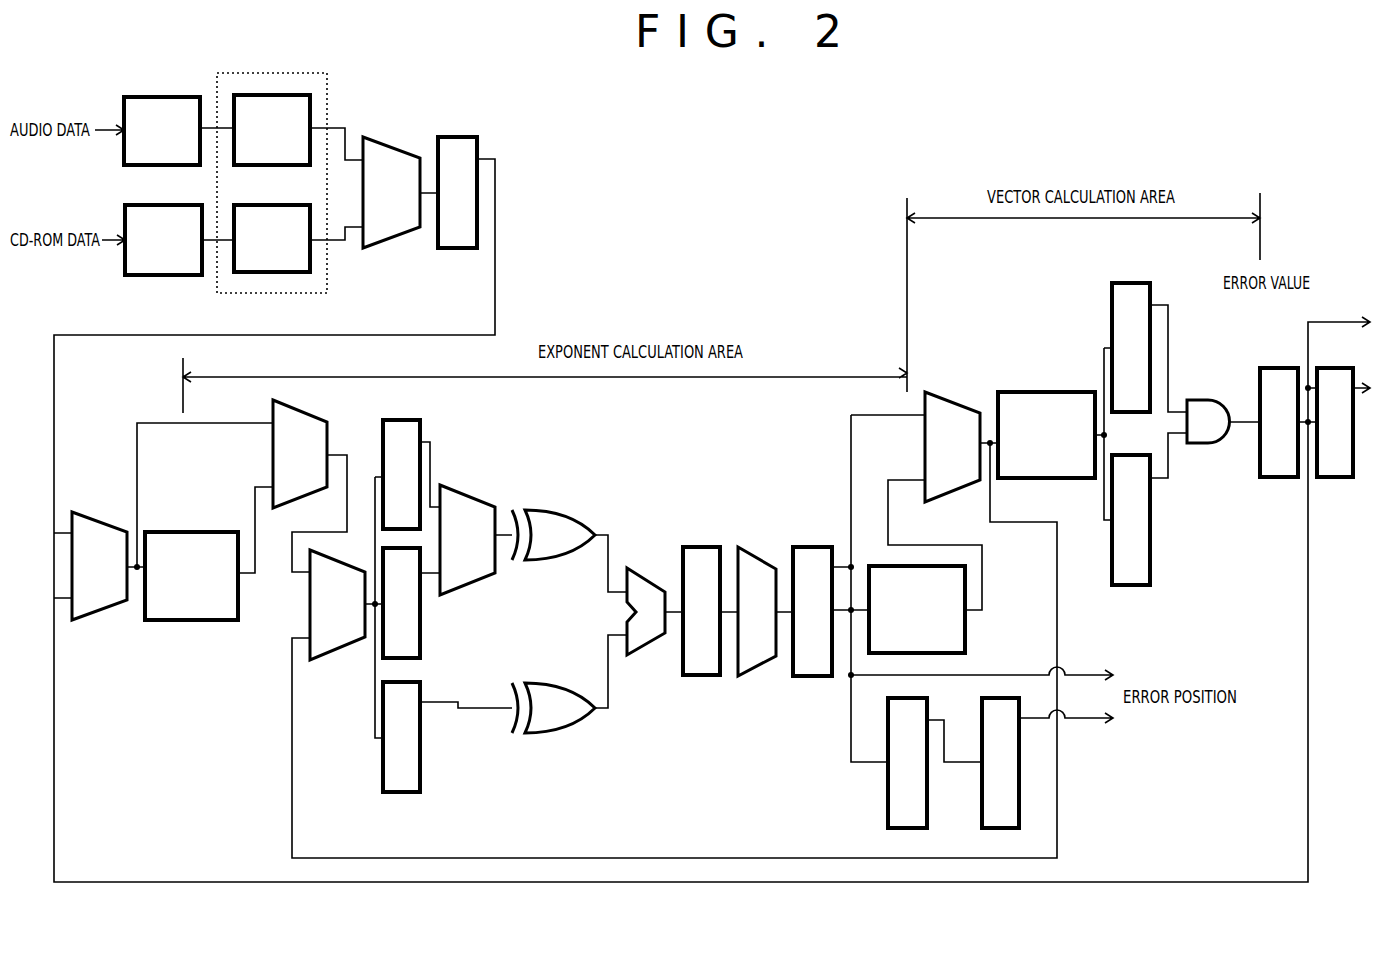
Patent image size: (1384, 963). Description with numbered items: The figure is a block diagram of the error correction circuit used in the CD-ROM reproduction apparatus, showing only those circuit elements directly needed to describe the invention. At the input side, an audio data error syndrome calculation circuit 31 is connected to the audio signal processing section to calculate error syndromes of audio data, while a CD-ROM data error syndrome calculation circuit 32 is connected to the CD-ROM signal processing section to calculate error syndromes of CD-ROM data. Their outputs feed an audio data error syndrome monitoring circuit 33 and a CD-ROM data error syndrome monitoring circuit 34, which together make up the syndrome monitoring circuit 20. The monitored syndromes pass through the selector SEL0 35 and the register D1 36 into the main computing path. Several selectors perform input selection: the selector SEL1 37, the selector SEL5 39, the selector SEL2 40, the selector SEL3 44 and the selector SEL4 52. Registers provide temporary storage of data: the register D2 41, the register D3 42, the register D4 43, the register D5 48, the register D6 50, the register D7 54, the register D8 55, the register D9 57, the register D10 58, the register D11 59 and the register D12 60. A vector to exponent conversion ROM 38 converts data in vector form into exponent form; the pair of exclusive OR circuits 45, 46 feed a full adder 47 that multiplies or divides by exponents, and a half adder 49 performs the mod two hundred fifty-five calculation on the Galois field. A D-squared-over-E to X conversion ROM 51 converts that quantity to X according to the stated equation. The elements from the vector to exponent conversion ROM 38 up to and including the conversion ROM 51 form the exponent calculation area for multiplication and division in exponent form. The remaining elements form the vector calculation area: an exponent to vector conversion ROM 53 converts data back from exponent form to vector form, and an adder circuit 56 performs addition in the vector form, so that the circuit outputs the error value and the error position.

The syndrome monitoring circuit 20 is at (263, 68).
The audio data error syndrome calculation circuit 31 is at (150, 96).
The CD-ROM data error syndrome calculation circuit 32 is at (155, 276).
The audio data error syndrome monitoring circuit 33 is at (300, 95).
The CD-ROM data error syndrome monitoring circuit 34 is at (265, 273).
The selector SEL0 35 is at (393, 148).
The register D1 36 is at (450, 134).
The selector SEL1 37 is at (96, 514).
The vector to exponent conversion ROM 38 is at (174, 531).
The selector SEL5 39 is at (331, 433).
The selector SEL2 40 is at (307, 601).
The register D2 41 is at (408, 422).
The register D3 42 is at (422, 618).
The register D4 43 is at (422, 736).
The selector SEL3 44 is at (470, 499).
The exclusive OR circuit EXOR1 45 is at (566, 511).
The exclusive OR circuit EXOR2 46 is at (563, 684).
The full adder 47 is at (637, 572).
The register D5 48 is at (700, 546).
The half adder 49 is at (746, 677).
The register D6 50 is at (817, 542).
The D^2/E to X conversion ROM 51 is at (967, 643).
The selector SEL4 52 is at (968, 405).
The exponent to vector conversion ROM 53 is at (1053, 392).
The register D7 54 is at (1127, 281).
The register D8 55 is at (1151, 553).
The adder circuit 56 is at (1200, 447).
The register D9 57 is at (1286, 367).
The register D10 58 is at (1330, 480).
The register D11 59 is at (887, 790).
The register D12 60 is at (981, 800).